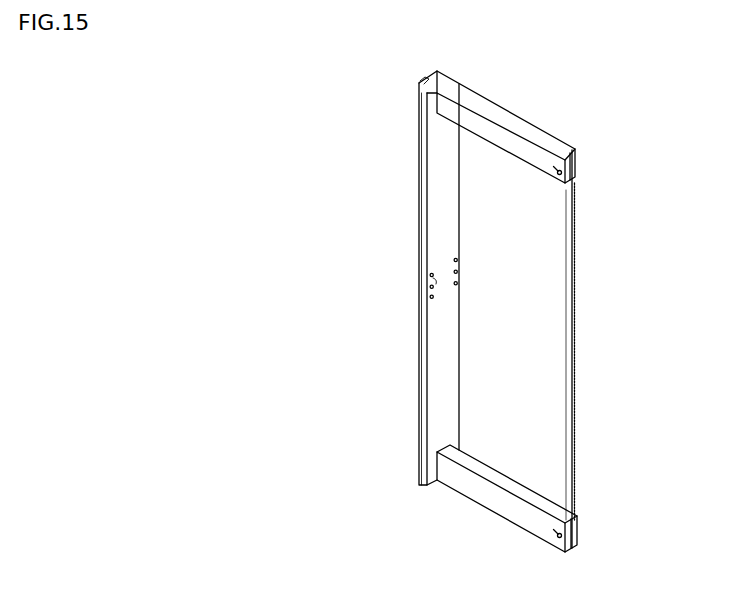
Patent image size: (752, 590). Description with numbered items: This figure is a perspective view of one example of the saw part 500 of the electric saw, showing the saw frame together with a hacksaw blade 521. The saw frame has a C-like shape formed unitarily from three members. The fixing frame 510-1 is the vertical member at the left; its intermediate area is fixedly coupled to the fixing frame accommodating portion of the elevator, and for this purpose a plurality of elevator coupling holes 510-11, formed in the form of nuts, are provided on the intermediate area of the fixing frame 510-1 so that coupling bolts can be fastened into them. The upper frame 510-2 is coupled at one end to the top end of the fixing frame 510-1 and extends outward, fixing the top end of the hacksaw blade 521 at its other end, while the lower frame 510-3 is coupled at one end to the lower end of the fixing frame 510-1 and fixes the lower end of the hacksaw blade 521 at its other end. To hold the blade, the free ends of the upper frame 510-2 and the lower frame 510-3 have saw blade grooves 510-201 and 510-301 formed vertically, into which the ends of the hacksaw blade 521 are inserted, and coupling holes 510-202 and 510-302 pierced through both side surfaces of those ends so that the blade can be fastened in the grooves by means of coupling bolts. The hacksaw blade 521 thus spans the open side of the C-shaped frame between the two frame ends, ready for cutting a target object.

The frame assembly 500 is at (373, 66).
The fixing frame 510-1 is at (420, 128).
The elevator coupling holes 510-11 is at (431, 285).
The upper frame 510-2 is at (495, 113).
The saw blade groove 510-201 is at (577, 160).
The coupling holes 510-202 is at (562, 168).
The lower frame 510-3 is at (472, 490).
The saw blade groove 510-301 is at (578, 542).
The coupling holes 510-302 is at (576, 528).
The hacksaw blade 521 is at (577, 216).